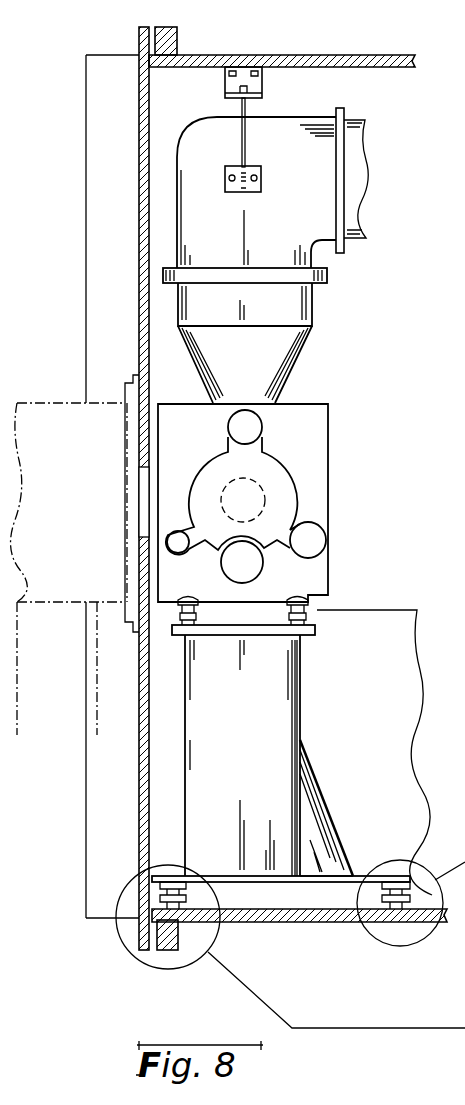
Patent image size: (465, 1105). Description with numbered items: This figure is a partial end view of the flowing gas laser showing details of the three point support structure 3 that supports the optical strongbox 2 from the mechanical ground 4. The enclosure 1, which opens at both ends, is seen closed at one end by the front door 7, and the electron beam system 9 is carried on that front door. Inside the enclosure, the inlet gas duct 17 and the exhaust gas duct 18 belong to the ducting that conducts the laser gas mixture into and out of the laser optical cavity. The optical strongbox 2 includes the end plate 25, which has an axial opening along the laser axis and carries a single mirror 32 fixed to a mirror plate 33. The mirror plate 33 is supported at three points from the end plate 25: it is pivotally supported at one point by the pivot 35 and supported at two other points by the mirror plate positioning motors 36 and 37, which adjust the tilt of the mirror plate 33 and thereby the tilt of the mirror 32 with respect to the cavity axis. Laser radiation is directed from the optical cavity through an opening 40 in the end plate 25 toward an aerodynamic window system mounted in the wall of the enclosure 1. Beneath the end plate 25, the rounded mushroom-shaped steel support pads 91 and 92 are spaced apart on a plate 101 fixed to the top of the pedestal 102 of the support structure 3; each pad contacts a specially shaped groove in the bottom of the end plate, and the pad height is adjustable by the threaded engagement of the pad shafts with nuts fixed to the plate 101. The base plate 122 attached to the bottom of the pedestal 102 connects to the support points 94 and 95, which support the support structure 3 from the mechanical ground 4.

The enclosure 1 is at (218, 56).
The front door 7 is at (86, 103).
The electron beam system 9 is at (47, 385).
The optical strongbox 2 is at (358, 385).
The exhaust gas duct 18 is at (297, 357).
The end plate 25 is at (328, 438).
The mirror plate positioning motor 36 is at (262, 425).
The mirror 32 is at (258, 480).
The mirror plate 33 is at (296, 497).
The mirror plate positioning motor 37 is at (326, 527).
The pivot 35 is at (178, 553).
The opening 40 is at (262, 576).
The support pad 92 is at (310, 600).
The inlet gas duct 17 is at (405, 610).
The support pad 91 is at (198, 605).
The plate 101 is at (315, 633).
The support structure 3 is at (315, 715).
The pedestal 102 is at (300, 737).
The support point 94 is at (193, 870).
The base plate 122 is at (317, 875).
The mechanical ground 4 is at (252, 905).
The support point 95 is at (385, 945).